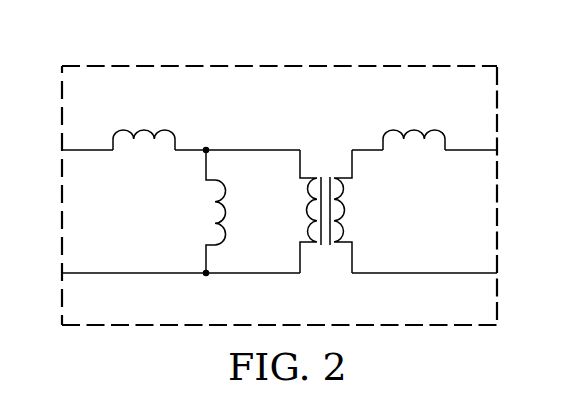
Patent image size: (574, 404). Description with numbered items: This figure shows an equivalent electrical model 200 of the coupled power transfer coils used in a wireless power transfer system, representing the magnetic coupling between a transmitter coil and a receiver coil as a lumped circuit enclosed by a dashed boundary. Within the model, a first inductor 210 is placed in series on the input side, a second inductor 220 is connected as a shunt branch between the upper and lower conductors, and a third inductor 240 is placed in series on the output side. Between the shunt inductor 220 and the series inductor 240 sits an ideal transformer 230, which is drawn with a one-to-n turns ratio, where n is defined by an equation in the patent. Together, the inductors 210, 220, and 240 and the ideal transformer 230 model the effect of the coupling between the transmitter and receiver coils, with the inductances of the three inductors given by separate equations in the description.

The equivalent electrical model 200 is at (214, 62).
The inductor 210 is at (122, 133).
The inductor 220 is at (225, 220).
The ideal transformer 230 is at (325, 244).
The inductor 240 is at (436, 132).